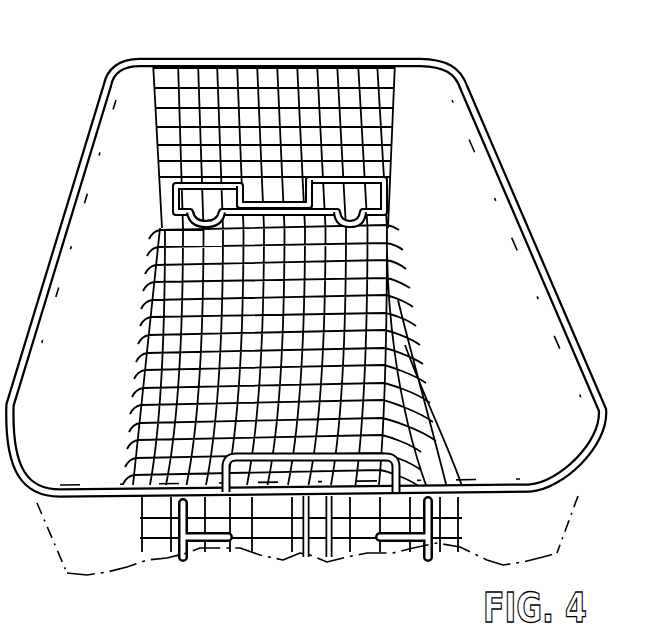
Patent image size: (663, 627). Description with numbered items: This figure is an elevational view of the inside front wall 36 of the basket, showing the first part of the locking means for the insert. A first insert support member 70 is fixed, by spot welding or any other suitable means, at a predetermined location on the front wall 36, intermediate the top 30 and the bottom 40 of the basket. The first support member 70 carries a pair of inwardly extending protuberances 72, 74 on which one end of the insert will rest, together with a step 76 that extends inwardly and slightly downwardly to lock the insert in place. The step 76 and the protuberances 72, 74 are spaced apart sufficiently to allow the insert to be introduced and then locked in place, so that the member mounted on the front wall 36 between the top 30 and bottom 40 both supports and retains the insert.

The top 30 is at (166, 60).
The front wall 36 is at (331, 120).
The bottom 40 is at (381, 383).
The first insert support member 70 is at (194, 186).
The inwardly extending protuberance 72 is at (198, 232).
The inwardly extending protuberance 74 is at (366, 236).
The step 76 is at (262, 206).